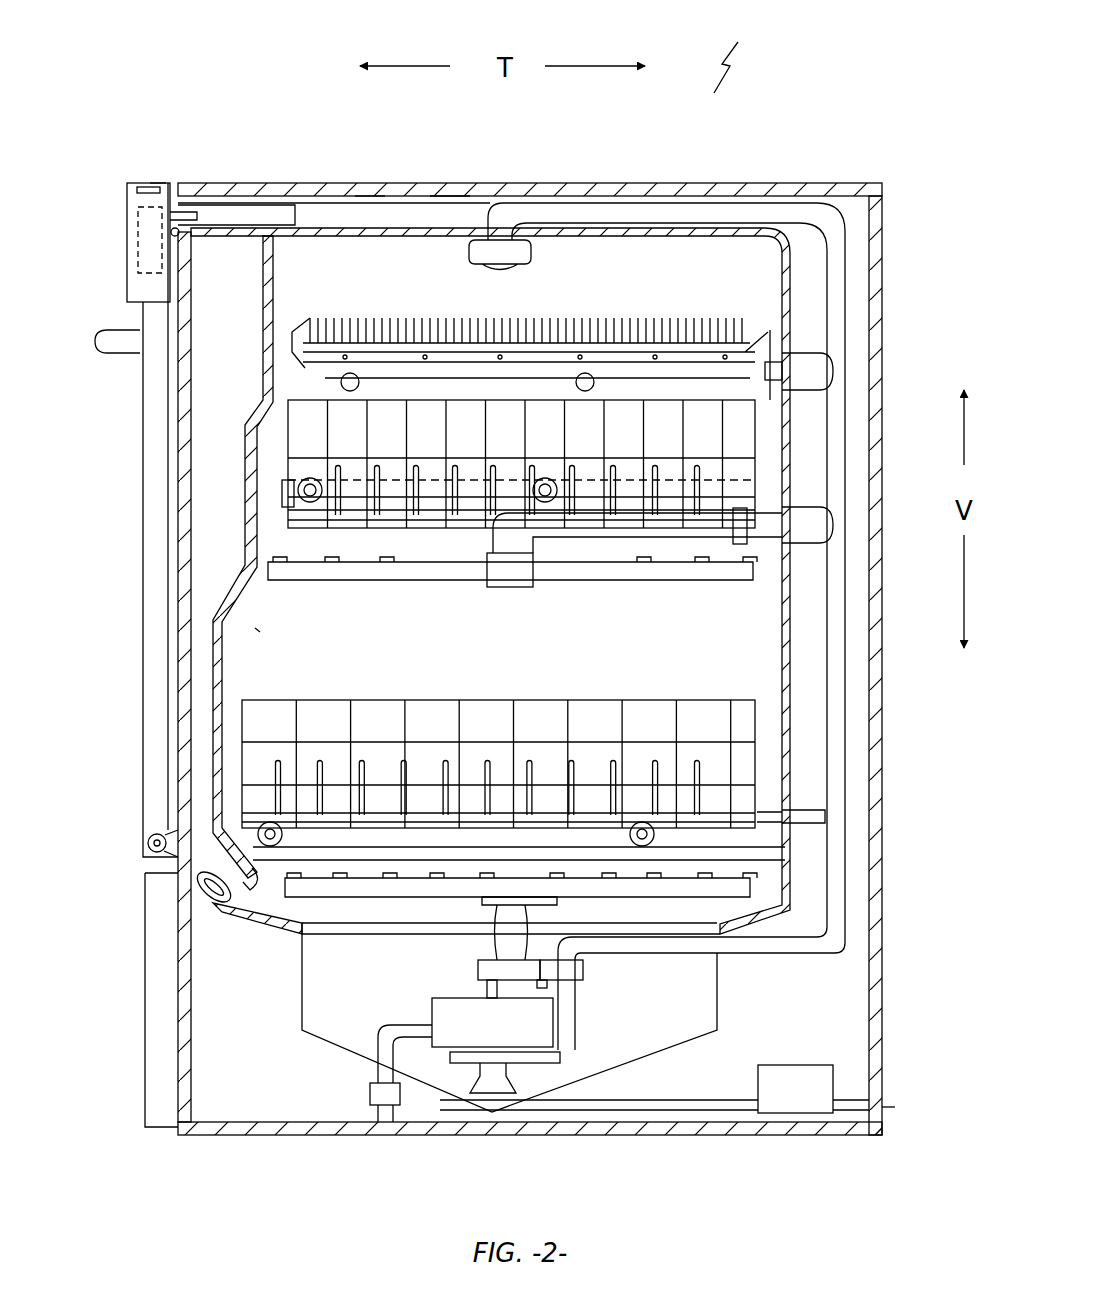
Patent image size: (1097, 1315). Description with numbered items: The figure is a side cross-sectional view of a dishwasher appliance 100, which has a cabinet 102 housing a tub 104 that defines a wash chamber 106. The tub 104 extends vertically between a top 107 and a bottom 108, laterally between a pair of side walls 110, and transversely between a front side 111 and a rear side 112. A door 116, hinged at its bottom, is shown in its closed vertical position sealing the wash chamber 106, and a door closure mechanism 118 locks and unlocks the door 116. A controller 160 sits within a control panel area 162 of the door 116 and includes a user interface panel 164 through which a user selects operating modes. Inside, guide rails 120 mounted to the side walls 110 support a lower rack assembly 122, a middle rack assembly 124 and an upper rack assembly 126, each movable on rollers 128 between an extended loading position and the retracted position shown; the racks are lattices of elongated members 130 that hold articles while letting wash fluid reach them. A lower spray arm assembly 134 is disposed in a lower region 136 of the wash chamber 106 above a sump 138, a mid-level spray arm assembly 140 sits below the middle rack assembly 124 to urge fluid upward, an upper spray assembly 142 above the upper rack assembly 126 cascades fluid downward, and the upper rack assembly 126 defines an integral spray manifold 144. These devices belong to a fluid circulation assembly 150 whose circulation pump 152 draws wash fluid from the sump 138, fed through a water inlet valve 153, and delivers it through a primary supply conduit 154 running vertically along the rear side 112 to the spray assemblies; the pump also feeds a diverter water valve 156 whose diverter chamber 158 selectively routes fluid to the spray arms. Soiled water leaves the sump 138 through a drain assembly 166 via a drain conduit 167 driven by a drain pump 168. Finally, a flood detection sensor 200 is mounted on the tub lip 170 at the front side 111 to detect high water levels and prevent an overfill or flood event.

The dishwasher appliance 100 is at (749, 49).
The cabinet 102 is at (882, 246).
The tub 104 is at (355, 646).
The wash chamber 106 is at (260, 632).
The top 107 is at (363, 208).
The bottom 108 is at (765, 893).
The side walls 110 is at (445, 205).
The front side 111 is at (280, 265).
The rear side 112 is at (800, 327).
The door 116 is at (140, 710).
The door closure mechanism 118 is at (170, 235).
The guide rails 120 is at (300, 465).
The lower rack assembly 122 is at (660, 695).
The middle rack assembly 124 is at (292, 378).
The upper rack assembly 126 is at (403, 305).
The rollers 128 is at (330, 403).
The elongated members 130 is at (745, 460).
The lower spray arm assembly 134 is at (667, 892).
The lower region 136 is at (755, 832).
The sump 138 is at (297, 970).
The mid-level spray arm assembly 140 is at (557, 570).
The upper spray assembly 142 is at (517, 265).
The integral spray manifold 144 is at (688, 378).
The fluid circulation assembly 150 is at (417, 1010).
The circulation pump 152 is at (533, 1020).
The water inlet valve 153 is at (370, 1097).
The primary supply conduit 154 is at (835, 718).
The diverter water valve 156 is at (470, 975).
The diverter chamber 158 is at (577, 967).
The controller 160 is at (120, 237).
The control panel area 162 is at (145, 178).
The user interface panel 164 is at (160, 180).
The drain assembly 166 is at (900, 1107).
The drain conduit 167 is at (663, 1110).
The drain pump 168 is at (775, 1065).
The tub lip 170 is at (207, 913).
The flood detection sensor 200 is at (200, 905).